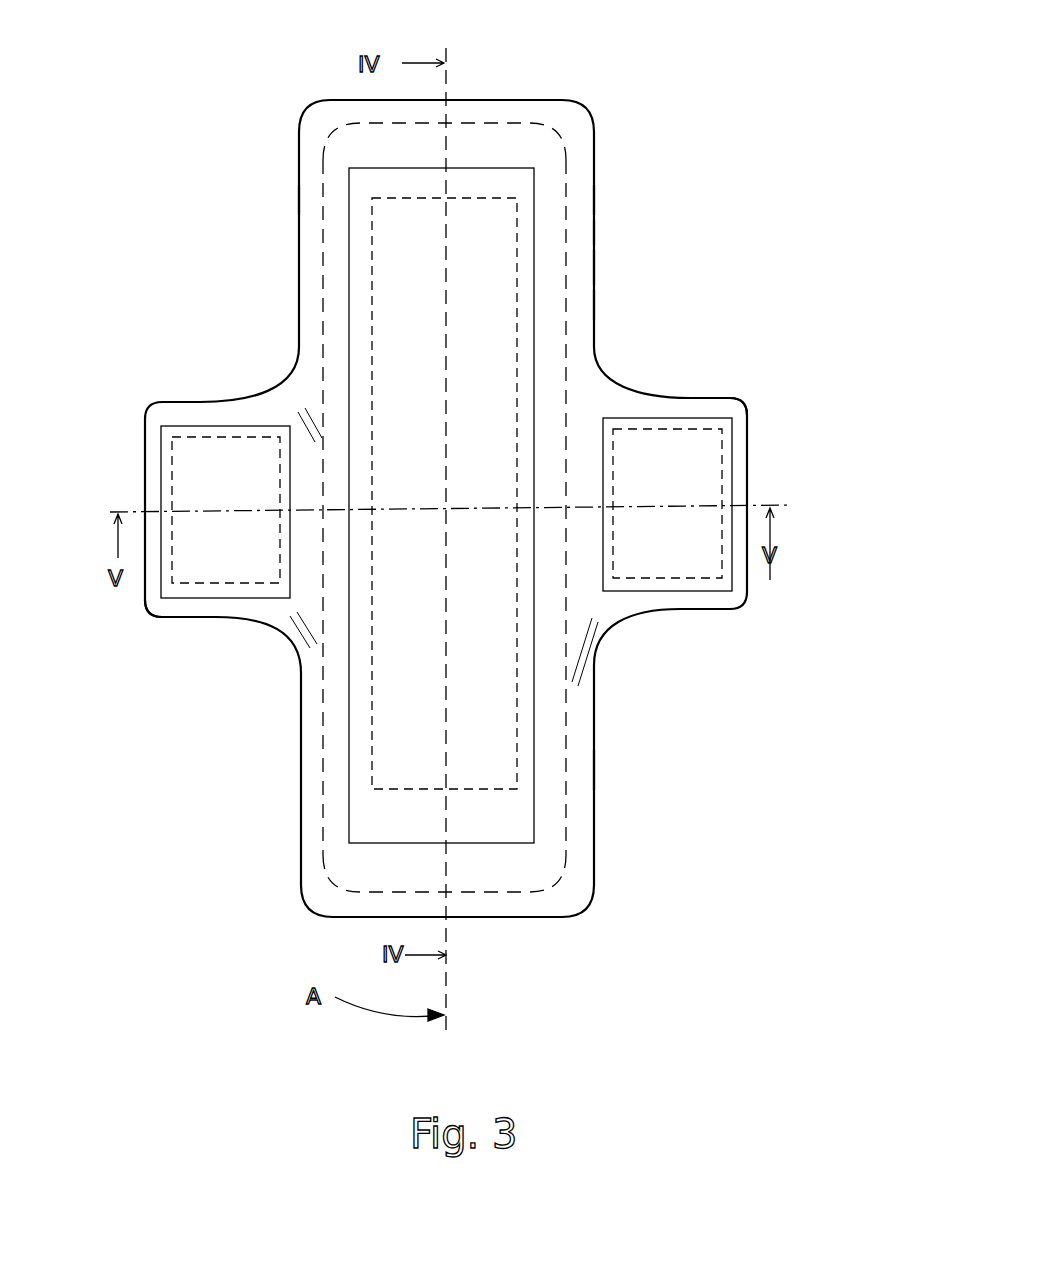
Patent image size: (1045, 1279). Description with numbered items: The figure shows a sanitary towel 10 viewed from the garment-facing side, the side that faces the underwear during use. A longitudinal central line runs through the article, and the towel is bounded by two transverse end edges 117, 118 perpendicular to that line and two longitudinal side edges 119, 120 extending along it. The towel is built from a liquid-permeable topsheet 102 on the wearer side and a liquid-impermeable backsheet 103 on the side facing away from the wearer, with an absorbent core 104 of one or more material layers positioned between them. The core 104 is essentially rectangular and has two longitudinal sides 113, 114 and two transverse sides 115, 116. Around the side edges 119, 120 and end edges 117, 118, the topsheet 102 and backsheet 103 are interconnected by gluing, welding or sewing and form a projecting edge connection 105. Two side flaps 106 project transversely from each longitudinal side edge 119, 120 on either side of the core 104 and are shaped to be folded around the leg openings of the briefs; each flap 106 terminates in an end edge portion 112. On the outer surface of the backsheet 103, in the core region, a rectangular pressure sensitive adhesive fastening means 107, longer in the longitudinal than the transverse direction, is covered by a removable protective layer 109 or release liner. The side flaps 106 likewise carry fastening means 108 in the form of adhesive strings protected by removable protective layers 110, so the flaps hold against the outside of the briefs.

The sanitary towel 10 is at (628, 64).
The liquid-permeable topsheet 102 is at (597, 200).
The liquid-impermeable backsheet 103 is at (568, 231).
The absorbent core 104 is at (575, 266).
The projecting edge connection 105 is at (582, 768).
The side flaps 106 is at (190, 410).
The adhesive fastening means 107 is at (395, 272).
The fastening means 108 is at (172, 468).
The removable protective layer 109 is at (352, 297).
The removable protective layers 110 is at (160, 586).
The end edge portion 112 is at (162, 618).
The longitudinal side 113 is at (566, 346).
The longitudinal side 114 is at (305, 316).
The transverse side 115 is at (572, 100).
The transverse side 116 is at (328, 912).
The transverse end edge 117 is at (492, 98).
The transverse end edge 118 is at (490, 920).
The longitudinal side edge 119 is at (596, 302).
The longitudinal side edge 120 is at (298, 199).